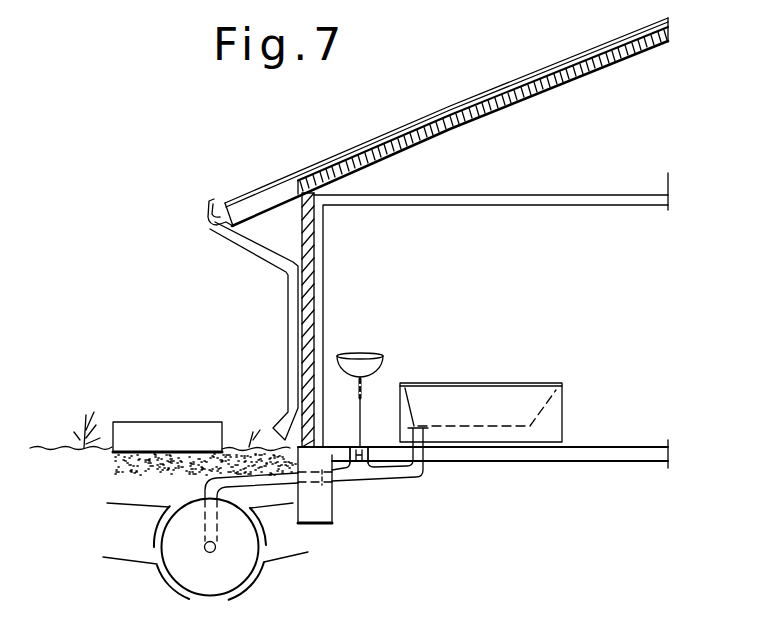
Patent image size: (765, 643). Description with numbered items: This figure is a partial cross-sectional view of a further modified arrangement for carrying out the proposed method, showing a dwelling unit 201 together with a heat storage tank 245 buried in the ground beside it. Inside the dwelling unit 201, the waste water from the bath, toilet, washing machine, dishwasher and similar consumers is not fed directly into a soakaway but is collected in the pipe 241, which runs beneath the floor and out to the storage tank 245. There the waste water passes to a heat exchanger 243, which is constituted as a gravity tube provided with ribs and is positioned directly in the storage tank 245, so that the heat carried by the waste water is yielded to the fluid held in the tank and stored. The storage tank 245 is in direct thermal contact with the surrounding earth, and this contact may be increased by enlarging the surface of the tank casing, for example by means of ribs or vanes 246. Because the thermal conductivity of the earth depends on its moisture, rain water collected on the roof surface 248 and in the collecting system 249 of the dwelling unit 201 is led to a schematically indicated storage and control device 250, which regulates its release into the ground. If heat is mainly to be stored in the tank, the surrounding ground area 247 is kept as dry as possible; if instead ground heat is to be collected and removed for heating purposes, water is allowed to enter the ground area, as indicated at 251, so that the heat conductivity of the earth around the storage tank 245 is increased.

The dwelling unit 201 is at (485, 58).
The roof surface 248 is at (373, 139).
The collecting system 249 is at (249, 240).
The storage and control device 250 is at (178, 421).
The ground area 247 is at (98, 488).
The water entry into ground area 251 is at (168, 463).
The pipe 241 is at (360, 474).
The storage tank 245 is at (203, 598).
The heat exchanger 243 is at (215, 553).
The vanes 246 is at (122, 511).